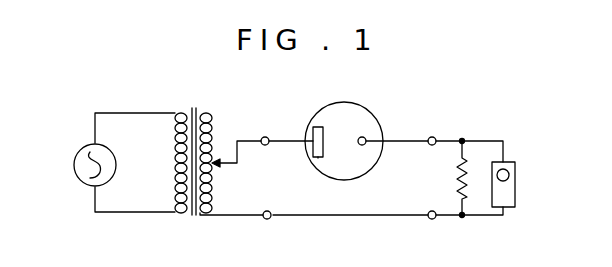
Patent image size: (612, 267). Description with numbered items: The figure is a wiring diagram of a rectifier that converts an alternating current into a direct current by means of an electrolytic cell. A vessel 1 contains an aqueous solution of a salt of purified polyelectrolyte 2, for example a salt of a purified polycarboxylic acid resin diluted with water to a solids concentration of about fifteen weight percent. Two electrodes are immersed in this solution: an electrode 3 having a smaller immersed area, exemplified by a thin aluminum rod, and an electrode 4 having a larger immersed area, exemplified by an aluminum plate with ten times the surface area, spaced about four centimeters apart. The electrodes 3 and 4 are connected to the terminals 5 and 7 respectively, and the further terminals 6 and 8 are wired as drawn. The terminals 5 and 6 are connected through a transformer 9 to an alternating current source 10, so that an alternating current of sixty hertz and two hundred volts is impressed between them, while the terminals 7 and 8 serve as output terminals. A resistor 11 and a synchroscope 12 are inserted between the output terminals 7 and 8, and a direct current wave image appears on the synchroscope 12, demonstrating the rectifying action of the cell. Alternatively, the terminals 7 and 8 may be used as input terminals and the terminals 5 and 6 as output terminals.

The vessel 1 is at (346, 102).
The aqueous solution of a salt of purified polyelectrolyte 2 is at (327, 117).
The electrode having a smaller immersed area 3 is at (362, 145).
The electrode having a larger immersed area 4 is at (316, 157).
The input terminal 5 is at (265, 137).
The input terminal 6 is at (269, 219).
The output terminal 7 is at (432, 137).
The output terminal 8 is at (432, 211).
The transformer 9 is at (193, 110).
The alternating current source 10 is at (87, 148).
The resistor 11 is at (463, 151).
The synchroscope 12 is at (516, 189).